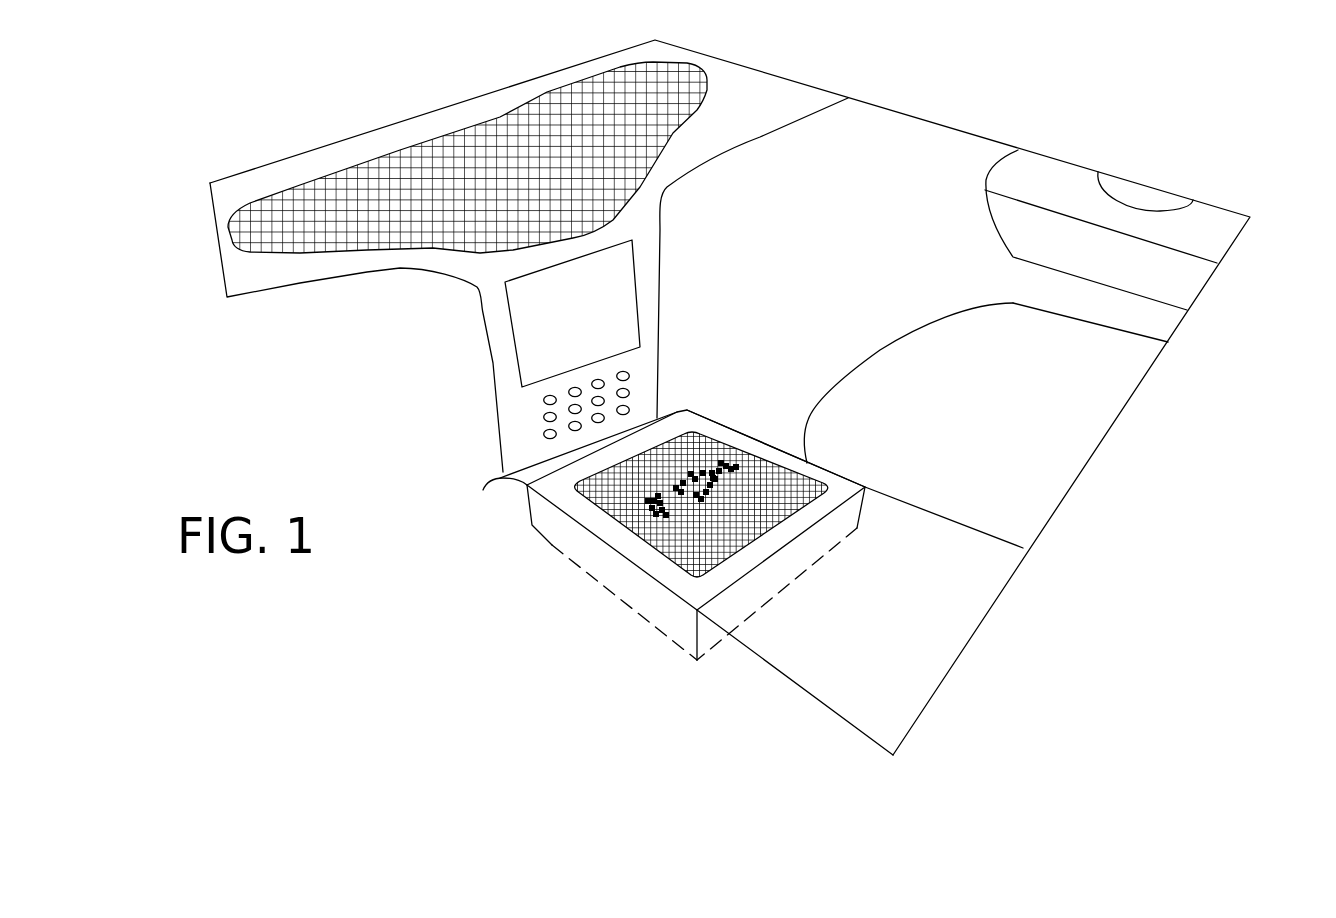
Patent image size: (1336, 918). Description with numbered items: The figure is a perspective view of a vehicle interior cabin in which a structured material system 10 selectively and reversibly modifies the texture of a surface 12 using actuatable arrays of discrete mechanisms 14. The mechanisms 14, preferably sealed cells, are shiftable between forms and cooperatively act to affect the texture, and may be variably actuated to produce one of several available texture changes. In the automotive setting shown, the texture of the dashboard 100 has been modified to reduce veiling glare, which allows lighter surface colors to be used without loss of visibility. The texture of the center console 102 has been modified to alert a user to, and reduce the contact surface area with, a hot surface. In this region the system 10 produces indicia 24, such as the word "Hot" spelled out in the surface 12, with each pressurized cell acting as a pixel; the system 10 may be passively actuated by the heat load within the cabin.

The structured material system 10 is at (489, 62).
The surface 12 is at (552, 181).
The discrete mechanisms 14 is at (582, 557).
The indicia 24 is at (733, 470).
The dashboard 100 is at (782, 114).
The center console 102 is at (886, 602).